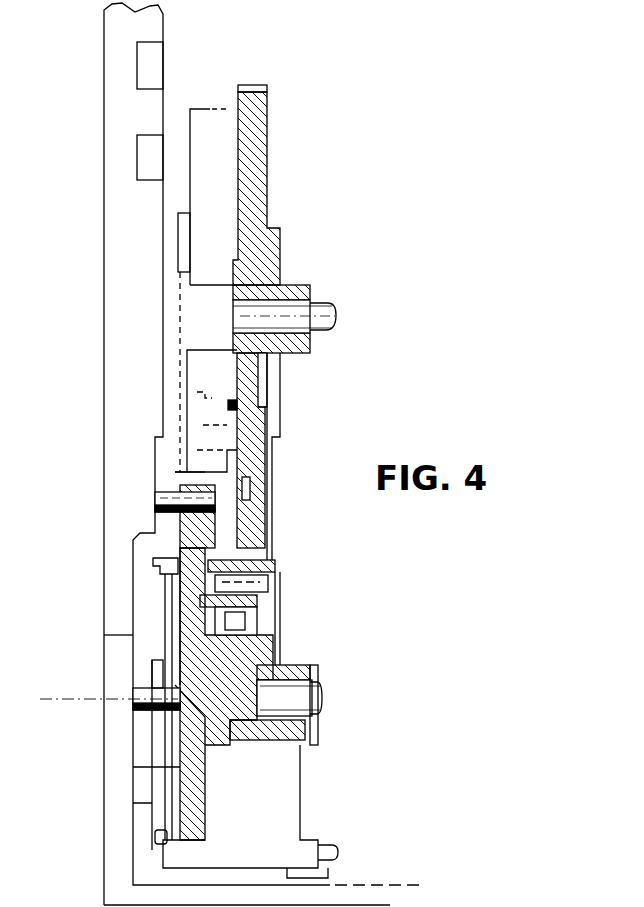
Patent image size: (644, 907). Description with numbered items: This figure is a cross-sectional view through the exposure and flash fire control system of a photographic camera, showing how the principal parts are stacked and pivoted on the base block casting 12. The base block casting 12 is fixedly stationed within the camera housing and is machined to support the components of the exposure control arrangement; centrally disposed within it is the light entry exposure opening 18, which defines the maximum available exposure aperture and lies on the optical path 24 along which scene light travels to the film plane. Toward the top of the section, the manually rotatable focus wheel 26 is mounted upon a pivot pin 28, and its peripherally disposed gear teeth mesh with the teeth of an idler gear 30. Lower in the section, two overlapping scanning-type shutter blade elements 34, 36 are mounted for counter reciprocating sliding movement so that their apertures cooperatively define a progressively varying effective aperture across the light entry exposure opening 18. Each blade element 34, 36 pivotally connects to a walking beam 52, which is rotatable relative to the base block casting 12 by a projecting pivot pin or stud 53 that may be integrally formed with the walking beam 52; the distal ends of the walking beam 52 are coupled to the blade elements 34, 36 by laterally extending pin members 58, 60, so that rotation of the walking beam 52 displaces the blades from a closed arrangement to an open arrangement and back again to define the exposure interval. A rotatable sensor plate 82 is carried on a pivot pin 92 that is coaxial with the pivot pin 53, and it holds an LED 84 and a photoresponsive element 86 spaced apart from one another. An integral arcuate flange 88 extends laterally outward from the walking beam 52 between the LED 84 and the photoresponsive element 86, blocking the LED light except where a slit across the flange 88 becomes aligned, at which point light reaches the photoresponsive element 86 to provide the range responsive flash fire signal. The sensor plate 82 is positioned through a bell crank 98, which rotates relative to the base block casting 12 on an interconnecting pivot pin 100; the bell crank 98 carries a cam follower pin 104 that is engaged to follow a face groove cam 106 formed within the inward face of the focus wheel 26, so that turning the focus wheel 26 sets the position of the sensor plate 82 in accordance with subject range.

The base block casting 12 is at (108, 185).
The light entry exposure opening 18 is at (122, 633).
The optical path 24 is at (78, 700).
The focus wheel 26 is at (262, 175).
The pivot pin 28 is at (322, 305).
The idler gear 30 is at (272, 507).
The shutter blade element 34 is at (205, 757).
The shutter blade element 36 is at (163, 730).
The walking beam 52 is at (147, 767).
The pivot pin 53 is at (148, 683).
The pin member 58 is at (155, 838).
The pin member 60 is at (153, 564).
The sensor plate 82 is at (270, 567).
The LED 84 is at (238, 566).
The photoresponsive element 86 is at (240, 628).
The arcuate flange 88 is at (250, 602).
The pivot pin 92 is at (325, 705).
The bell crank 98 is at (176, 472).
The pivot pin 100 is at (165, 498).
The cam follower pin 104 is at (234, 403).
The face groove cam 106 is at (272, 455).